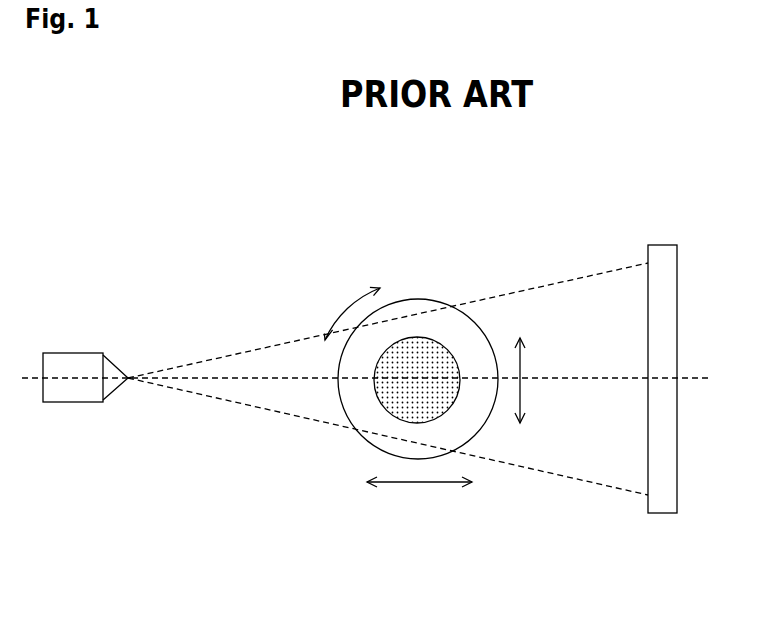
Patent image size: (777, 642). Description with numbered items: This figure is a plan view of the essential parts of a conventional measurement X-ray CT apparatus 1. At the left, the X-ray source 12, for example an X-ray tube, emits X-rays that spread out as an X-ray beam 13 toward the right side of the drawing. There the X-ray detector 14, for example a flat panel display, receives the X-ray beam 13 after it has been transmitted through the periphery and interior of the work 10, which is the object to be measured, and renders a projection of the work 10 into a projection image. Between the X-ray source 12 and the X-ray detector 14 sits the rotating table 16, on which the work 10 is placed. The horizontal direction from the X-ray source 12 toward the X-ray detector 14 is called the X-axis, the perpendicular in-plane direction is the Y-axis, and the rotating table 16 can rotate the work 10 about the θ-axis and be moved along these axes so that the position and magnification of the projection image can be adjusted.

The measurement X-ray CT apparatus 1 is at (260, 195).
The work 10 is at (415, 363).
The X-ray source 12 is at (68, 353).
The X-ray beam 13 is at (232, 402).
The X-ray detector 14 is at (648, 508).
The rotating table 16 is at (402, 300).